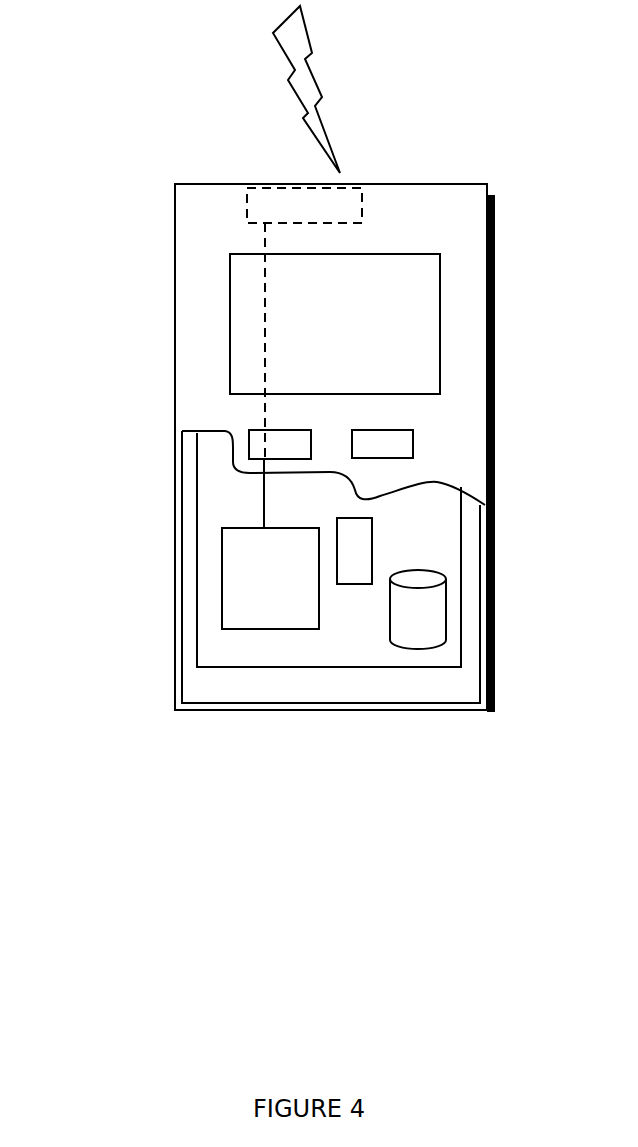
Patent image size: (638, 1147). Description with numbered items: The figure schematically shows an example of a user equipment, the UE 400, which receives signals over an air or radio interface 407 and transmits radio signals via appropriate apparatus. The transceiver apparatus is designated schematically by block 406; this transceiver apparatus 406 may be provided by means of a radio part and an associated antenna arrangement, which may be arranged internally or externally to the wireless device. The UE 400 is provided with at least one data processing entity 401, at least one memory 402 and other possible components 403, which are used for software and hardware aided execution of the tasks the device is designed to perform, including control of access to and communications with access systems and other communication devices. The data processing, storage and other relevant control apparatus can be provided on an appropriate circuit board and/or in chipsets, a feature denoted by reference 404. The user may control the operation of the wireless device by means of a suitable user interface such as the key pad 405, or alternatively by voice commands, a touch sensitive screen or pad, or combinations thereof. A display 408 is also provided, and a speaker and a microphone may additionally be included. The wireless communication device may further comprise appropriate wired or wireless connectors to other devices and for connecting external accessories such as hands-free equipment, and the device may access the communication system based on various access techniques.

The user equipment 400 is at (177, 227).
The data processing entity 401 is at (230, 562).
The memory 402 is at (412, 622).
The other possible components 403 is at (355, 535).
The circuit board and/or chipsets 404 is at (222, 648).
The key pad 405 is at (253, 443).
The transceiver apparatus 406 is at (352, 199).
The air or radio interface 407 is at (341, 110).
The display 408 is at (247, 310).